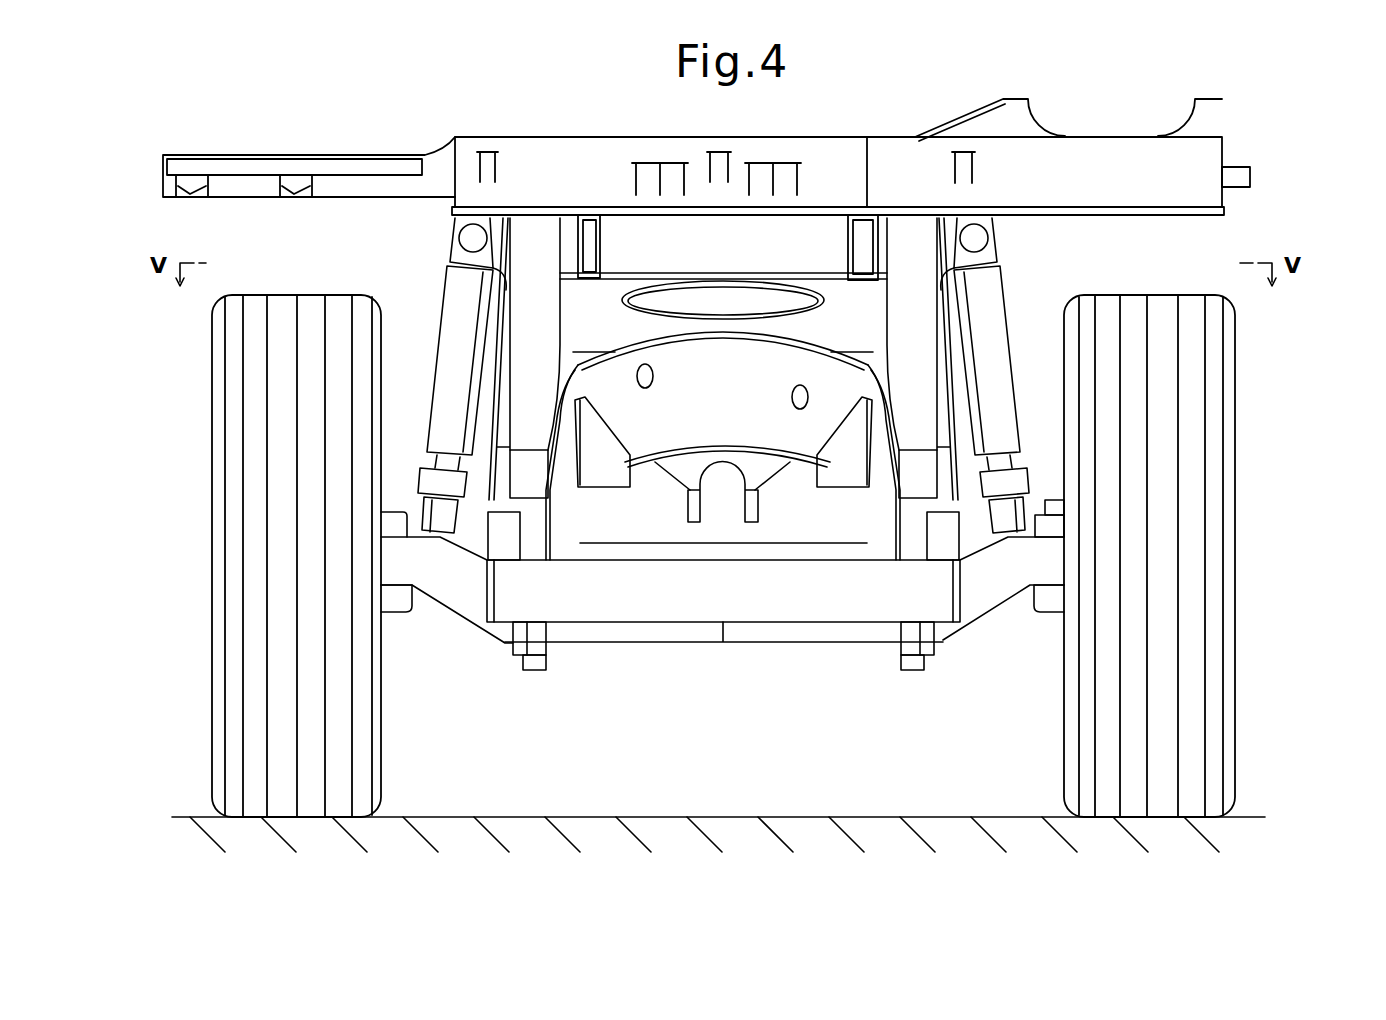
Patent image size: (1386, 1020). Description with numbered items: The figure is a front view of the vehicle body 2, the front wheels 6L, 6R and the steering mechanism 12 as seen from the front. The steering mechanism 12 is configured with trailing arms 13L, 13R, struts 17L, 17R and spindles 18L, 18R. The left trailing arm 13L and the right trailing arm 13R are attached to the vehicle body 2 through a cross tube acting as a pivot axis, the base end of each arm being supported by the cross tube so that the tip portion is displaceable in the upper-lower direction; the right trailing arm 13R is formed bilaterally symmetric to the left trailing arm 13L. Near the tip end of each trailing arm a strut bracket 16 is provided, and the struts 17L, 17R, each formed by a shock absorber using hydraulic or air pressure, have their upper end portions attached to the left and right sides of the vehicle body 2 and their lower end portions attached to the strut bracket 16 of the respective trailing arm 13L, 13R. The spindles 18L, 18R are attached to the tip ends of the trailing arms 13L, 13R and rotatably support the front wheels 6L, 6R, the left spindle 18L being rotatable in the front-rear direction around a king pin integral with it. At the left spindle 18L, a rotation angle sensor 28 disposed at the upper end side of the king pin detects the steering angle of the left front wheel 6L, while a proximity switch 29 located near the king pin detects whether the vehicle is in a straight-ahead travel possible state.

The vehicle body 2 is at (605, 145).
The right front wheel 6R is at (228, 557).
The left front wheel 6L is at (1218, 582).
The steering mechanism 12 is at (715, 666).
The right trailing arm 13R is at (470, 612).
The left trailing arm 13L is at (978, 612).
The strut bracket 16 is at (432, 508).
The right strut 17R is at (455, 323).
The left strut 17L is at (995, 325).
The right spindle 18R is at (398, 603).
The left spindle 18L is at (1048, 602).
The rotation angle sensor 28 is at (1062, 502).
The proximity switch 29 is at (1035, 527).